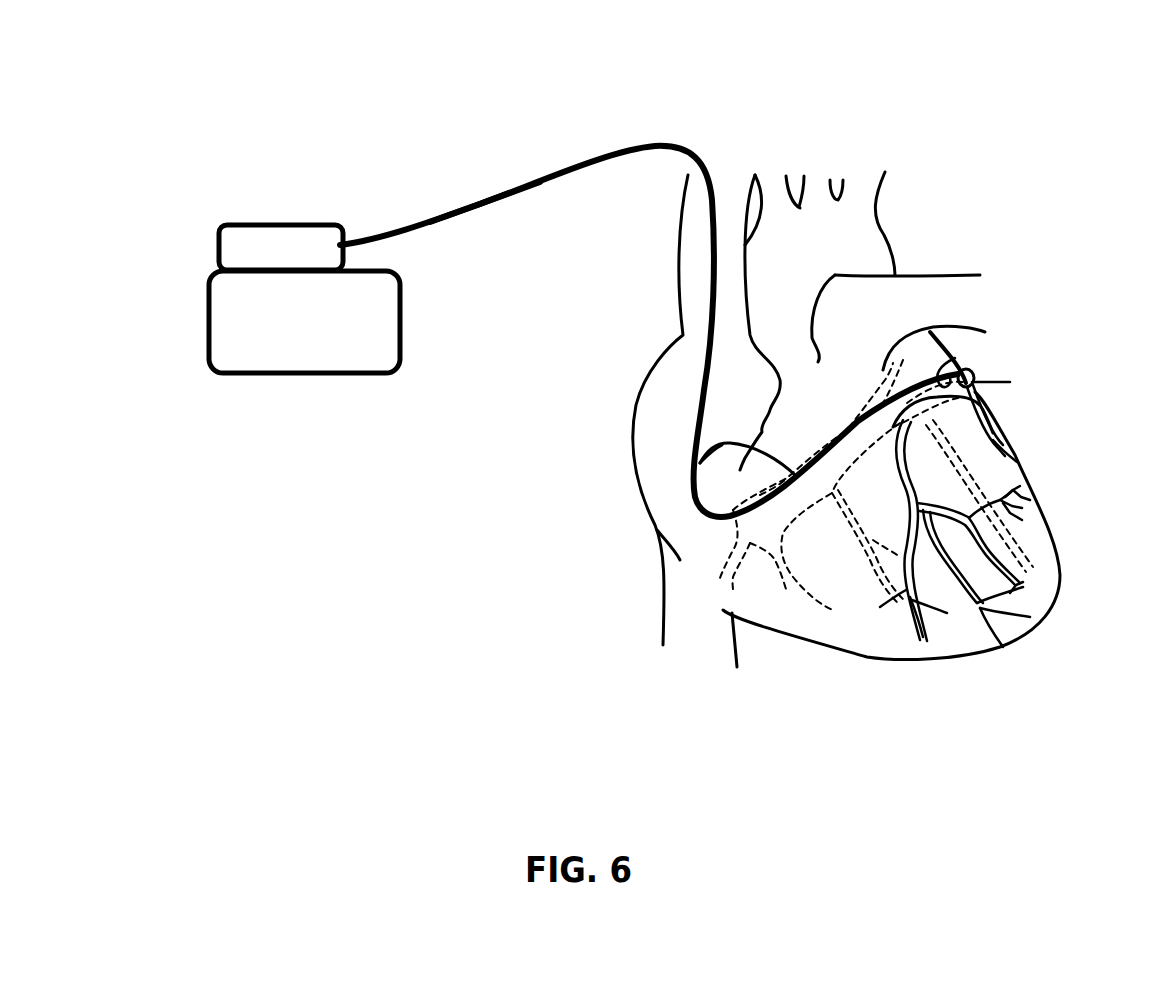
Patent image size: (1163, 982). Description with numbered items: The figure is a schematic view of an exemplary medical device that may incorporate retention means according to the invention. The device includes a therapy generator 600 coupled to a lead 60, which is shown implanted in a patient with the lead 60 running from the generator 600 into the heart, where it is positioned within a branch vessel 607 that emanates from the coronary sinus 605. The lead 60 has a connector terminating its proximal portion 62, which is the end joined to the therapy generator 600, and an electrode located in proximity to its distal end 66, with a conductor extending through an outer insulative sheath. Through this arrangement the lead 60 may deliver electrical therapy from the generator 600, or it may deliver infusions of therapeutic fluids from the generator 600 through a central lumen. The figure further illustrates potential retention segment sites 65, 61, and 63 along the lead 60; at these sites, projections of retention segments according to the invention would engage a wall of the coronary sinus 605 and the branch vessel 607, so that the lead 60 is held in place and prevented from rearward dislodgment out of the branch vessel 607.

The therapy generator 600 is at (310, 345).
The lead 60 is at (665, 146).
The proximal portion 62 is at (523, 187).
The retention segment site 61 is at (955, 358).
The retention segment site 63 is at (968, 374).
The branch vessel 607 is at (1010, 382).
The distal end 66 is at (1010, 427).
The retention segment site 65 is at (698, 467).
The coronary sinus 605 is at (770, 517).